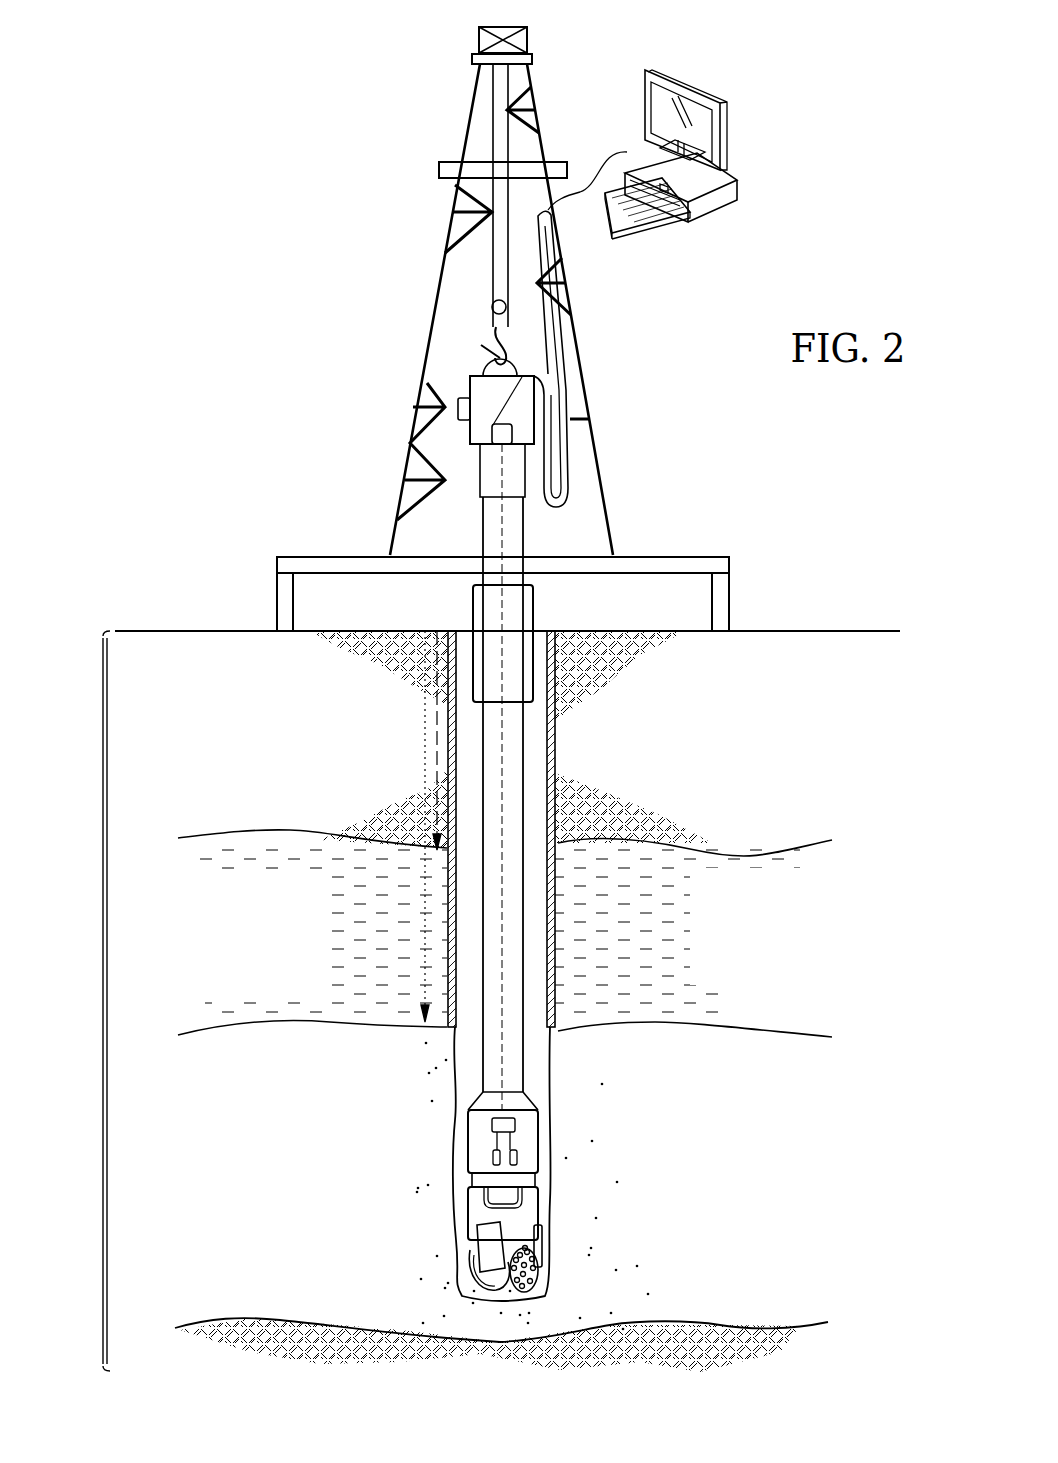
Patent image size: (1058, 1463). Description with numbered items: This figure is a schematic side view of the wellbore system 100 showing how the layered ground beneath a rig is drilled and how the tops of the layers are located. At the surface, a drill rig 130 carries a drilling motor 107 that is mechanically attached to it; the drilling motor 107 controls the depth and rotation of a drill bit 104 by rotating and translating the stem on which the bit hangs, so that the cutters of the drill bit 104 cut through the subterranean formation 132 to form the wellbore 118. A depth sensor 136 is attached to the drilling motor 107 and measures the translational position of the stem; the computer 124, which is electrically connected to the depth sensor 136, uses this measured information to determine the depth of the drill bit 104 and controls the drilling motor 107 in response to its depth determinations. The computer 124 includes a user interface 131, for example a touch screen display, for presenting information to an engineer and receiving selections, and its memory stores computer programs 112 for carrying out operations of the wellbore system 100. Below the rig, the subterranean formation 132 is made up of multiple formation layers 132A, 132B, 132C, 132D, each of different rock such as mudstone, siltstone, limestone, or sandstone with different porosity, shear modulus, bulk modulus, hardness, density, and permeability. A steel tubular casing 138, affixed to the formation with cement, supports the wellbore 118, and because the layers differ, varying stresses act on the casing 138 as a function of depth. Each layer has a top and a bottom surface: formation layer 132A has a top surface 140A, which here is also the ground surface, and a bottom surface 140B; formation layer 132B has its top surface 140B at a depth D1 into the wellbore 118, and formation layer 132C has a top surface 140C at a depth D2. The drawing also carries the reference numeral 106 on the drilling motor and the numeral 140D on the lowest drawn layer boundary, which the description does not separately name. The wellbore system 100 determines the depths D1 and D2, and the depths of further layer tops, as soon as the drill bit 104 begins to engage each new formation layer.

The wellbore system 100 is at (280, 55).
The drill bit 104 is at (540, 1205).
The sensor 106 is at (478, 437).
The drilling motor 107 is at (470, 385).
The computer programs 112 is at (556, 945).
The wellbore 118 is at (537, 1083).
The computer 124 is at (757, 145).
The drill rig 130 is at (463, 125).
The user interface 131 is at (690, 82).
The subterranean formation 132 is at (103, 993).
The formation layer 132A is at (242, 751).
The formation layer 132B is at (242, 945).
The formation layer 132C is at (303, 1187).
The formation layer 132D is at (250, 1368).
The depth sensor 136 is at (458, 408).
The casing 138 is at (546, 760).
The top surface 140A is at (803, 631).
The top surface 140B is at (805, 840).
The top surface 140C is at (718, 1025).
The formation boundary 140D is at (688, 1320).
The depth D1 is at (428, 716).
The depth D2 is at (411, 826).